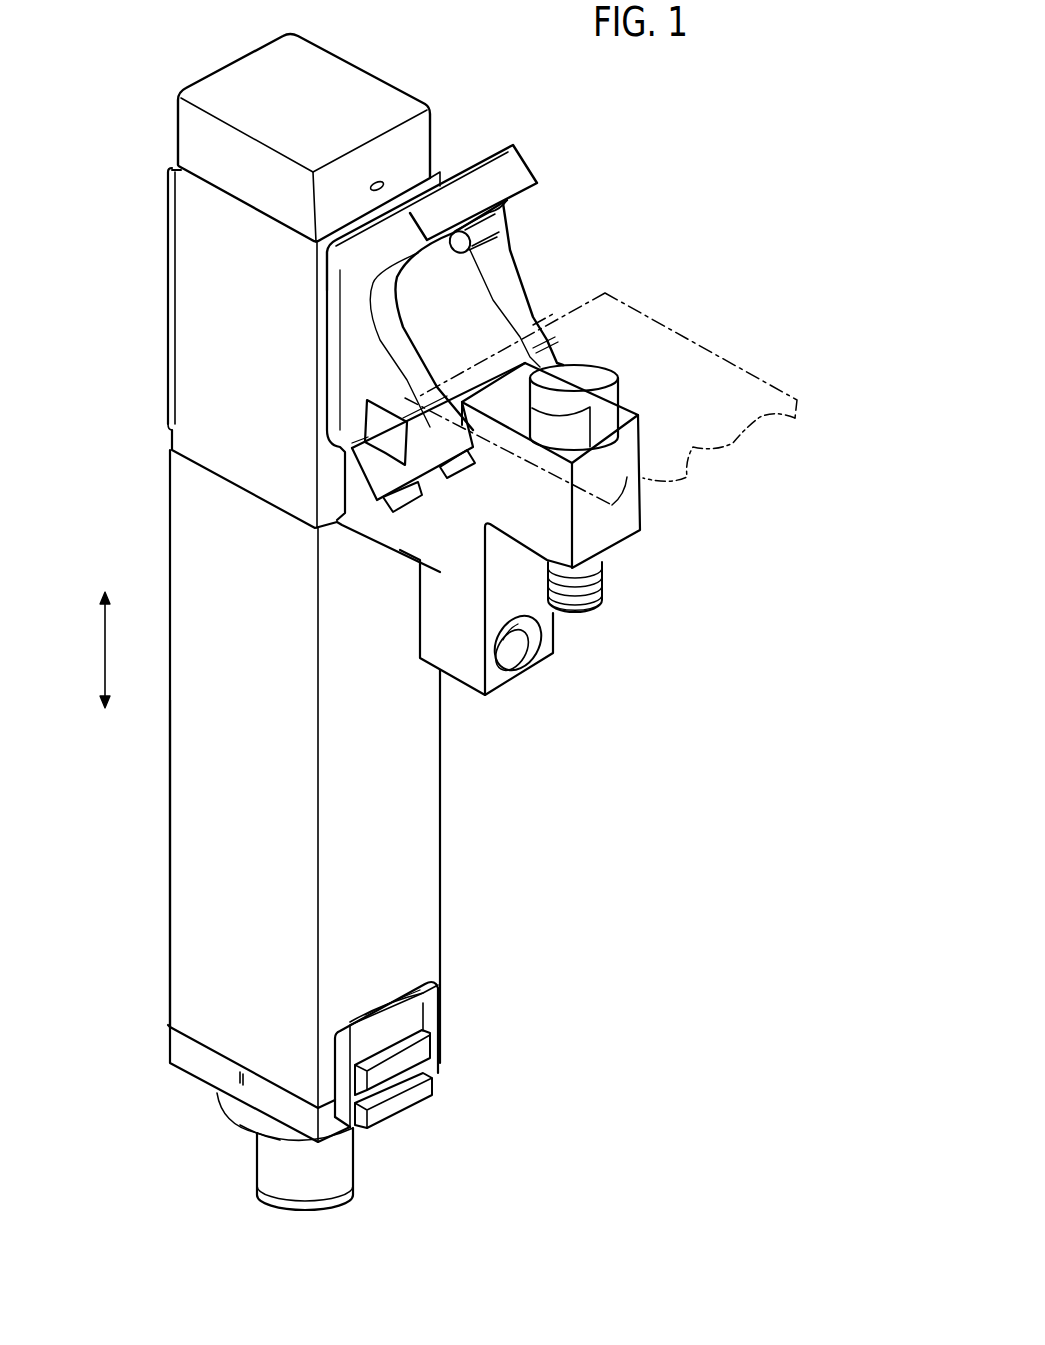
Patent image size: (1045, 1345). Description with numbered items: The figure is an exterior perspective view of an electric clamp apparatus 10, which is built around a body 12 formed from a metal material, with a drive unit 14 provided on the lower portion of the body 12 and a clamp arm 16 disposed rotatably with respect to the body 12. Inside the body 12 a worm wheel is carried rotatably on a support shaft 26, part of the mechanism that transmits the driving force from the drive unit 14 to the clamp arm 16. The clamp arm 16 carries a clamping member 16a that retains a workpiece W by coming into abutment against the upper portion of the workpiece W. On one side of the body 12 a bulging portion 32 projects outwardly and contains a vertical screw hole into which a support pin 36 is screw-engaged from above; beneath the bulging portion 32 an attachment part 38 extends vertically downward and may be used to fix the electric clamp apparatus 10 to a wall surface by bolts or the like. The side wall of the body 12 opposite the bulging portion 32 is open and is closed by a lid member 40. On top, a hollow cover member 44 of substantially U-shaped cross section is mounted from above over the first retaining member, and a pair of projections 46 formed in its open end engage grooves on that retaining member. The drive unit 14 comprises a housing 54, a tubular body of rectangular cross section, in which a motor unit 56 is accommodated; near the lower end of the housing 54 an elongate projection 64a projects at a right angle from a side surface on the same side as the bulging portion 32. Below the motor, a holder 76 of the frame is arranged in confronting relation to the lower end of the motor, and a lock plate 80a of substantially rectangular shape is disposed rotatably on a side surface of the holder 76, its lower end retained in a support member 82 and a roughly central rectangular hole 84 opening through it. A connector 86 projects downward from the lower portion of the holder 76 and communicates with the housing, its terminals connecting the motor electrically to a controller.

The electric clamp apparatus 10 is at (168, 56).
The body 12 is at (155, 210).
The drive unit 14 is at (452, 860).
The clamp arm 16 is at (528, 150).
The clamping member 16a is at (497, 252).
The support shaft 26 is at (378, 425).
The bulging portion 32 is at (630, 515).
The support pin 36 is at (595, 380).
The attachment part 38 is at (497, 683).
The lid member 40 is at (166, 389).
The cover member 44 is at (352, 74).
The projections 46 is at (375, 180).
The housing 54 is at (190, 935).
The motor unit 56 is at (195, 1080).
The projection 64a is at (418, 1050).
The holder 76 is at (178, 1050).
The lock plate 80a is at (412, 1008).
The support member 82 is at (390, 1110).
The hole 84 is at (390, 1043).
The connector 86 is at (275, 1165).
The workpiece W is at (662, 325).